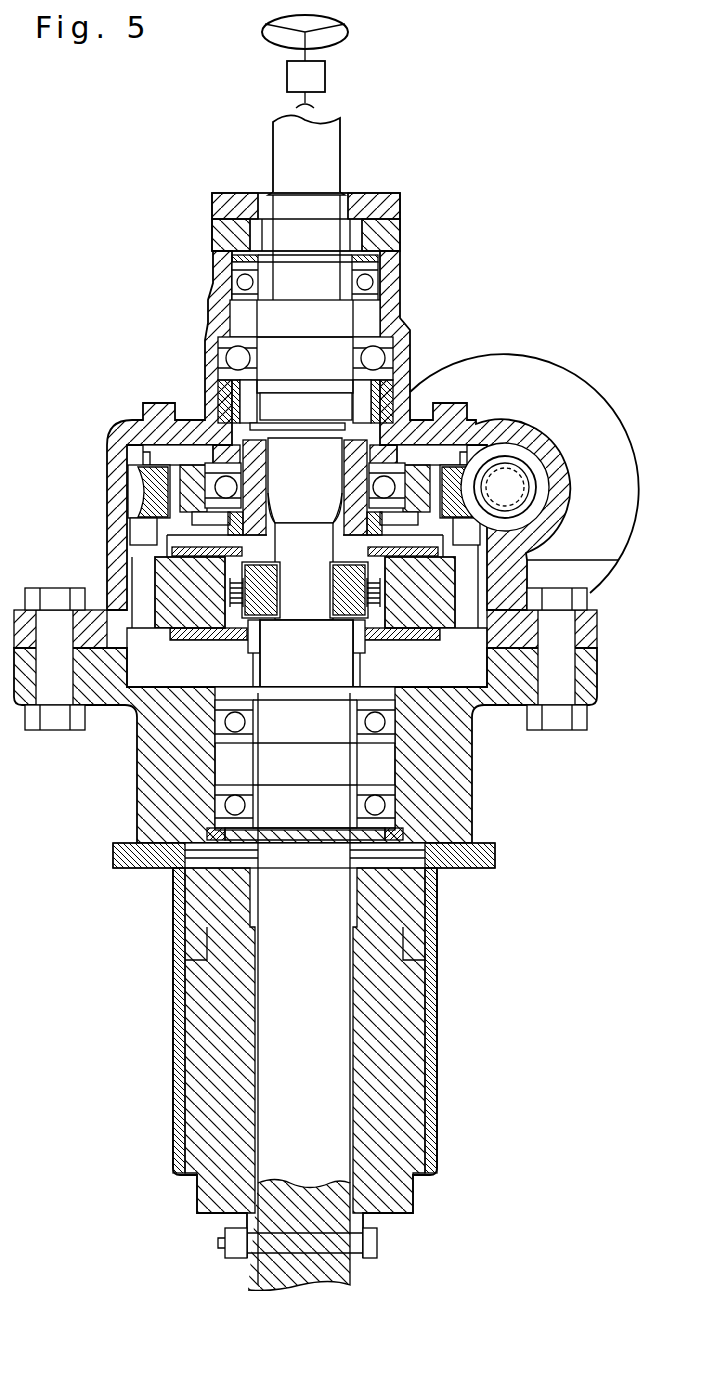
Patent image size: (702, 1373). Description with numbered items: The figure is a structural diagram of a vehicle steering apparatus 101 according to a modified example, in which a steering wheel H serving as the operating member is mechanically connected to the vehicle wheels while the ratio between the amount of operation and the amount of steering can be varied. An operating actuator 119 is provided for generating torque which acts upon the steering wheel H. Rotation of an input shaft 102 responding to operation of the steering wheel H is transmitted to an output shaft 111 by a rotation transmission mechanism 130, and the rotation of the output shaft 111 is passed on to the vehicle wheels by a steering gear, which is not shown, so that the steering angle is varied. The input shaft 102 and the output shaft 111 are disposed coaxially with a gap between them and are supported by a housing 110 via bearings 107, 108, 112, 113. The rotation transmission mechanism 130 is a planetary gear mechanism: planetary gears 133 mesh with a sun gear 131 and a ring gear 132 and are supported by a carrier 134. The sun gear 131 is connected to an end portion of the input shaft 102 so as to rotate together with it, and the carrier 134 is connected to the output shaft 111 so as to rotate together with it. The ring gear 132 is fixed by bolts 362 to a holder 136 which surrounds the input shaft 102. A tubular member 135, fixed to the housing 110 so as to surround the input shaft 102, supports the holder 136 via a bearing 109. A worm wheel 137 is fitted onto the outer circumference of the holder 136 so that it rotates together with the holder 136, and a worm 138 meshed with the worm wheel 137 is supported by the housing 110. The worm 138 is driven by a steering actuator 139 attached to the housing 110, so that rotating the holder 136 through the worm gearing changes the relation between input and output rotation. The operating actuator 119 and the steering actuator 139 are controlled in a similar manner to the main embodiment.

The steering wheel H is at (350, 33).
The operating actuator 119 is at (315, 77).
The input shaft 102 is at (297, 151).
The steering apparatus 101 is at (405, 210).
The bearing 107 is at (368, 283).
The bearing 108 is at (375, 357).
The housing 110 is at (212, 336).
The worm 138 is at (506, 462).
The steering actuator 139 is at (588, 412).
The tubular member 135 is at (213, 480).
The bearing 109 is at (247, 452).
The worm wheel 137 is at (135, 487).
The holder 136 is at (163, 532).
The bolts 362 is at (143, 577).
The carrier 134 is at (220, 668).
The sun gear 131 is at (348, 602).
The planetary gears 133 is at (347, 603).
The ring gear 132 is at (438, 602).
The rotation transmission mechanism 130 is at (162, 698).
The bearing 112 is at (230, 722).
The bearing 113 is at (230, 805).
The output shaft 111 is at (300, 1027).